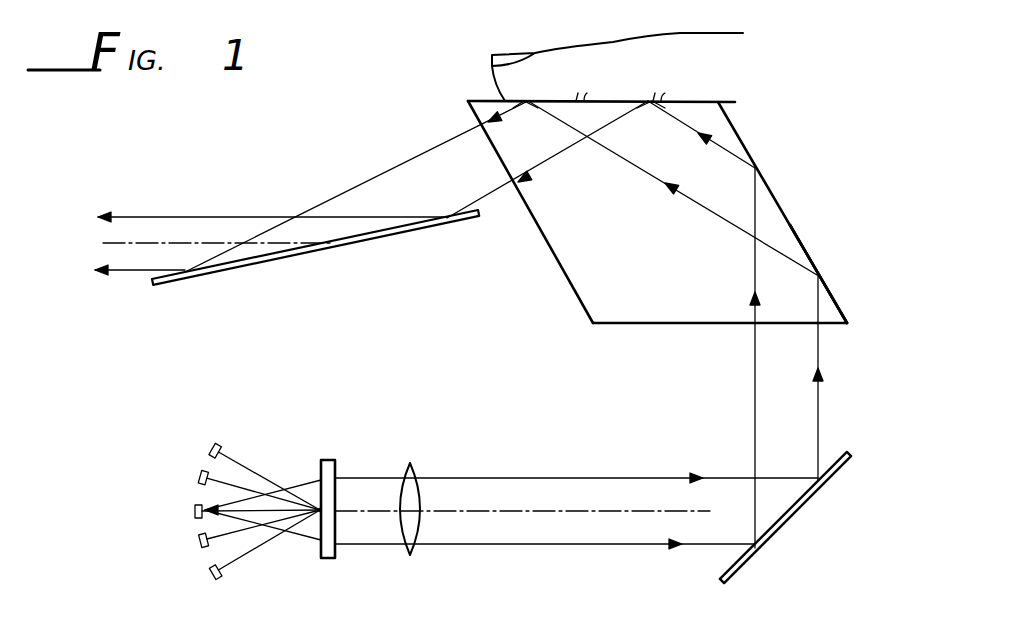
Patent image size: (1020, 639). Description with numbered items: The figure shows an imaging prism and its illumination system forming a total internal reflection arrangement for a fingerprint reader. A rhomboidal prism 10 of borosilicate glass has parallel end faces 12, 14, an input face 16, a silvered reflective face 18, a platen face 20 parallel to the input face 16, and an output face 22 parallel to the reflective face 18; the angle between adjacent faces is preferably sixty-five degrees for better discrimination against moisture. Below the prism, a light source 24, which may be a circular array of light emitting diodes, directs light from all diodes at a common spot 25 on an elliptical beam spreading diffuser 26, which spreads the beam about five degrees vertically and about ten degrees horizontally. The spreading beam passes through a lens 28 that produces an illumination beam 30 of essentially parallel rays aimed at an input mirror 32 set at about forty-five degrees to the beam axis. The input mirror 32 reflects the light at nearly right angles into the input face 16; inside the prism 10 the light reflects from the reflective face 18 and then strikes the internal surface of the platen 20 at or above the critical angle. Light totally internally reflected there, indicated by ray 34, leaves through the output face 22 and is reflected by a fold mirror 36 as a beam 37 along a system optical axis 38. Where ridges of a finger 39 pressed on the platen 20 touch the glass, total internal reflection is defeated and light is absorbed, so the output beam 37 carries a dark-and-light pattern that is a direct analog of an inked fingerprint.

The rhomboidal prism 10 is at (650, 219).
The end face 12 is at (828, 302).
The end face 14 is at (828, 302).
The input face 16 is at (668, 327).
The reflective face 18 is at (795, 232).
The platen face 20 is at (481, 100).
The output face 22 is at (486, 148).
The light source 24 is at (193, 511).
The common spot 25 is at (316, 517).
The elliptical beam spreading diffuser 26 is at (325, 460).
The lens 28 is at (412, 465).
The illumination beam 30 is at (542, 528).
The input mirror 32 is at (787, 522).
The ray 34 is at (548, 163).
The fold mirror 36 is at (275, 258).
The output light beam 37 is at (252, 227).
The system optical axis 38 is at (197, 243).
The finger 39 is at (608, 52).